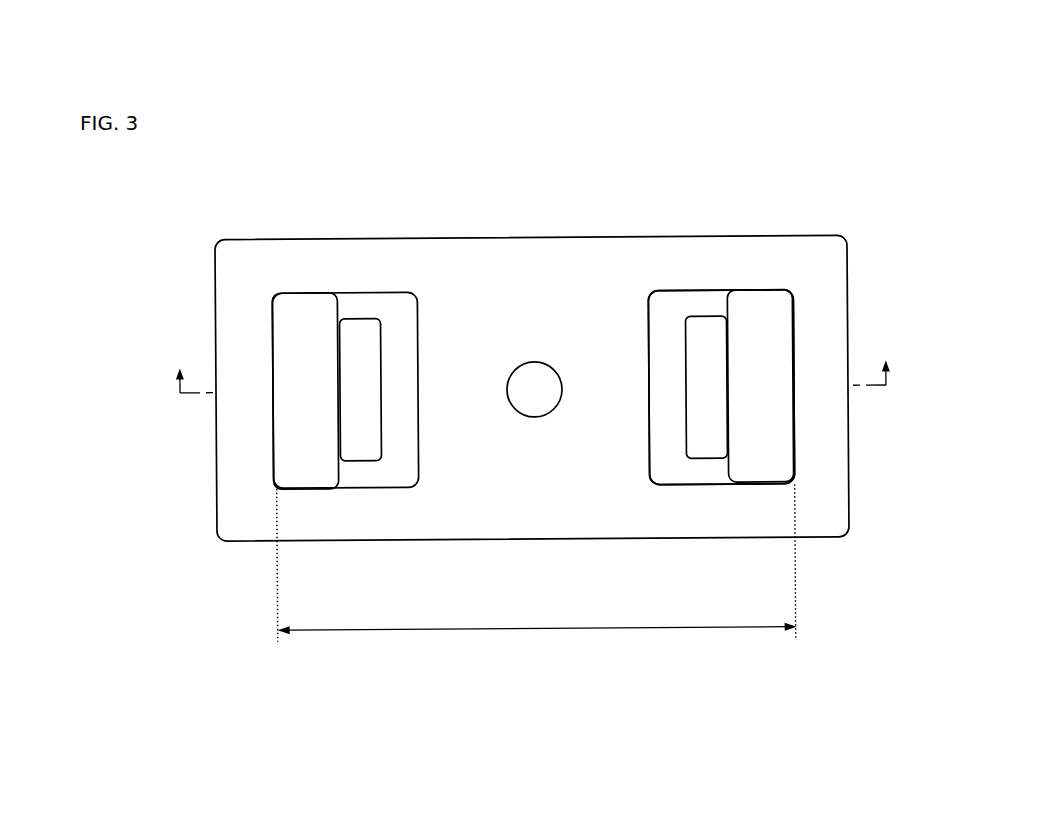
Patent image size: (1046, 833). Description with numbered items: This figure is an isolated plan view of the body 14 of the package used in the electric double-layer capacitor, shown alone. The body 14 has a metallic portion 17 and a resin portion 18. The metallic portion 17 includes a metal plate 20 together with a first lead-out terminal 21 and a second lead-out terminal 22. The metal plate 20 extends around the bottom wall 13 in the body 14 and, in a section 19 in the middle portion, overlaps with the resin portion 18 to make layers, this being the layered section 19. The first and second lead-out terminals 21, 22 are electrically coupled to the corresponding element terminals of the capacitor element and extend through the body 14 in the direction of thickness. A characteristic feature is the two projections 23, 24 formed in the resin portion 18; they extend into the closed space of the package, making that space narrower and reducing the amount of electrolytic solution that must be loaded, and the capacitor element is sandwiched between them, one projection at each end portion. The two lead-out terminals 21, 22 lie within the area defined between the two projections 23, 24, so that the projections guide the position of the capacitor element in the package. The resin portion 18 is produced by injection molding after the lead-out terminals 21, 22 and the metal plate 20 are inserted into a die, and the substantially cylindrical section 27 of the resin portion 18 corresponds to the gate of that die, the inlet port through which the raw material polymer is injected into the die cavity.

The bottom wall 13 is at (450, 524).
The body 14 is at (451, 136).
The metallic portion 17 is at (678, 170).
The resin portion 18 is at (657, 338).
The layered section 19 is at (510, 629).
The metal plate 20 is at (757, 258).
The first lead-out terminal 21 is at (349, 322).
The second lead-out terminal 22 is at (702, 321).
The projection 23 is at (298, 297).
The projection 24 is at (777, 304).
The substantially cylindrical section 27 is at (532, 407).